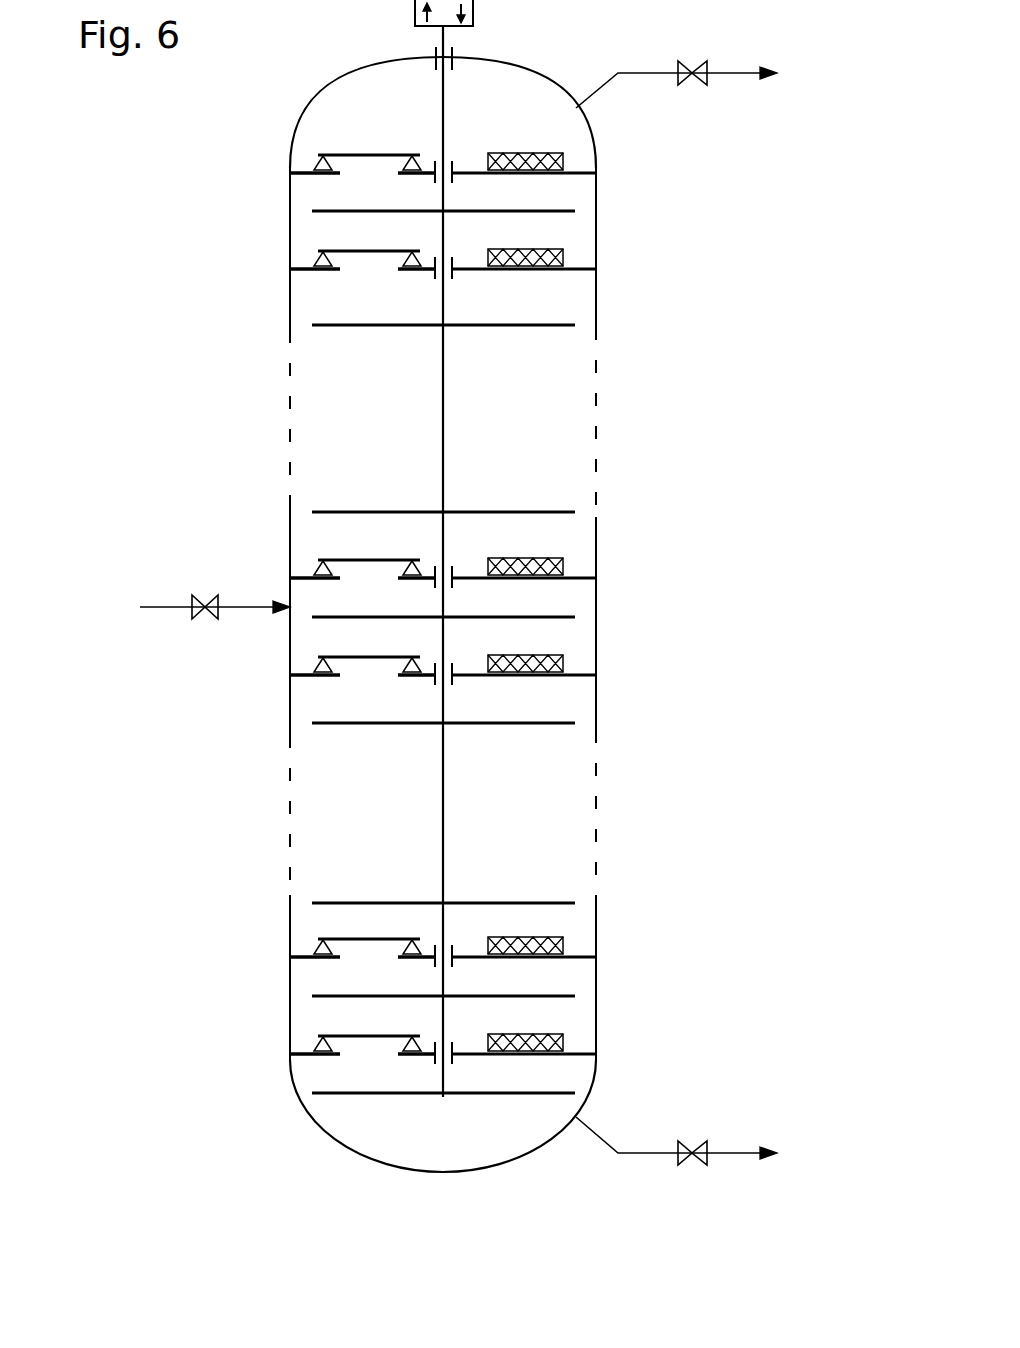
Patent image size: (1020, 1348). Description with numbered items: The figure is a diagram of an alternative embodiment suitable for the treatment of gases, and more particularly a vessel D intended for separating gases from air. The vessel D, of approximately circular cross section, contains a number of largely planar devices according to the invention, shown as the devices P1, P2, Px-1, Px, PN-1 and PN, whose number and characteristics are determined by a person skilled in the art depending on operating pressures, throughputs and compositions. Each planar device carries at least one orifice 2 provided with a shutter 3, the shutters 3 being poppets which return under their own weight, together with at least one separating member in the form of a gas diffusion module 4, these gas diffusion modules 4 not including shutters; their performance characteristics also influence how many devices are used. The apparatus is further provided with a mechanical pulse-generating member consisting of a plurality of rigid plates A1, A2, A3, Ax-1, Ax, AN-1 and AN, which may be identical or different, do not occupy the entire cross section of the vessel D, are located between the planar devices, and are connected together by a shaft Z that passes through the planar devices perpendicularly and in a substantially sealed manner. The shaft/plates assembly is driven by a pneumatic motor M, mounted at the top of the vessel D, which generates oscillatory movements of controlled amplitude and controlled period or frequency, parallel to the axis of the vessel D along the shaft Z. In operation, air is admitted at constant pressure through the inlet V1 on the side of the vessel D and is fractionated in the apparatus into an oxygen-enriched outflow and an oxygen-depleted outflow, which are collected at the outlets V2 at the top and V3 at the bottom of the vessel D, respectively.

The orifice 2 is at (363, 176).
The shutter 3 is at (360, 156).
The gas diffusion module 4 is at (543, 154).
The vessel D is at (337, 95).
The shaft Z is at (443, 90).
The pneumatic motor M is at (415, 3).
The air inlet V1 is at (199, 597).
The oxygen-enriched outflow outlet V2 is at (688, 85).
The oxygen-depleted outflow outlet V3 is at (688, 1145).
The planar device PN is at (587, 171).
The planar device PN-1 is at (587, 267).
The planar device Px is at (587, 576).
The planar device Px-1 is at (587, 673).
The planar device P2 is at (590, 955).
The planar device P1 is at (590, 1052).
The rigid plate AN is at (567, 210).
The rigid plate AN-1 is at (556, 327).
The rigid plate Ax-1 is at (558, 510).
The rigid plate Ax is at (567, 615).
The rigid plate A3 is at (560, 902).
The rigid plate A2 is at (567, 994).
The rigid plate A1 is at (553, 1095).